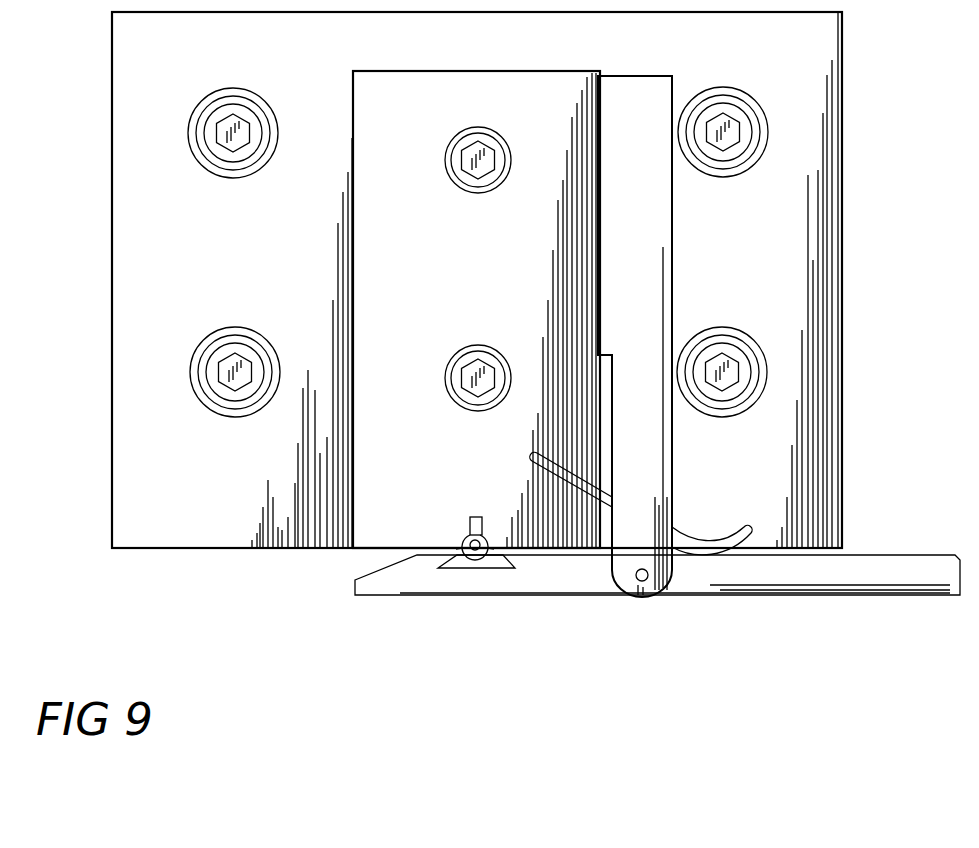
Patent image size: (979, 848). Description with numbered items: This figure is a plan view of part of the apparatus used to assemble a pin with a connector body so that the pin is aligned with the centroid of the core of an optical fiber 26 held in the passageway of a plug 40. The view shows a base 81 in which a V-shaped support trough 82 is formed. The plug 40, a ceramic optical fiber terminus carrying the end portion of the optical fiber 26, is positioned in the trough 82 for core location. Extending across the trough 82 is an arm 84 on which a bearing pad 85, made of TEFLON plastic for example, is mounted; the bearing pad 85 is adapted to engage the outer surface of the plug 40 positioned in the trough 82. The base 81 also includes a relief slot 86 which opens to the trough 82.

The base 81 is at (418, 368).
The V-shaped support trough 82 is at (460, 543).
The relief slot 86 is at (470, 522).
The optical fiber 26 is at (478, 552).
The plug 40 is at (465, 556).
The bearing pad 85 is at (498, 565).
The arm 84 is at (790, 577).